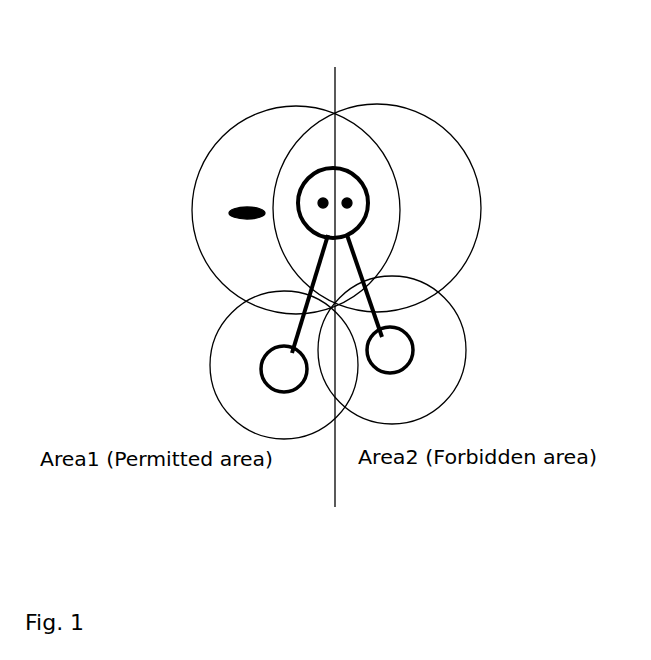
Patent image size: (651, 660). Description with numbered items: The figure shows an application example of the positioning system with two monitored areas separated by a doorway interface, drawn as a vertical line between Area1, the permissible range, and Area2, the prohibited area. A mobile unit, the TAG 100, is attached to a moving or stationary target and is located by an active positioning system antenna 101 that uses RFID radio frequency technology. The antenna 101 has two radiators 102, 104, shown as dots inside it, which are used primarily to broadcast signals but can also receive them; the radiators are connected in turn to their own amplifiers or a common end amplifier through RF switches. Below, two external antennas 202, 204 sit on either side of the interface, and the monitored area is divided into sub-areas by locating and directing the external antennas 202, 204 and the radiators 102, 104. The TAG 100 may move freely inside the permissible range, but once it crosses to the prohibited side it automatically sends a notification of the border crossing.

The TAG 100 is at (231, 212).
The active positioning system antenna 101 is at (323, 167).
The radiator 102 is at (320, 199).
The radiator 104 is at (352, 198).
The external antenna 202 is at (262, 360).
The external antenna 204 is at (413, 343).